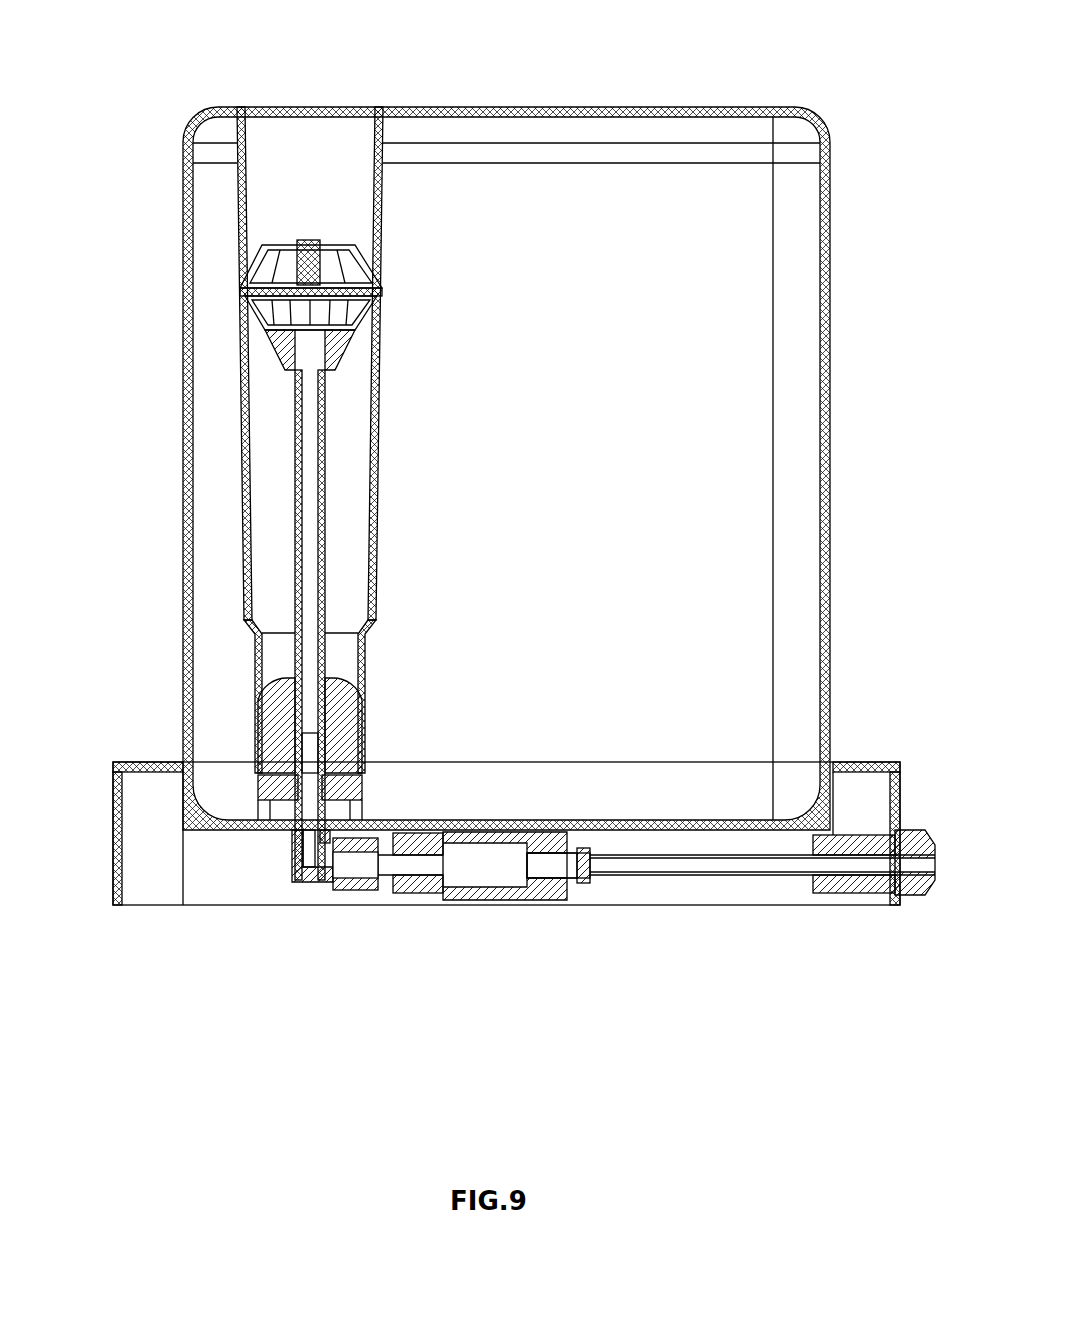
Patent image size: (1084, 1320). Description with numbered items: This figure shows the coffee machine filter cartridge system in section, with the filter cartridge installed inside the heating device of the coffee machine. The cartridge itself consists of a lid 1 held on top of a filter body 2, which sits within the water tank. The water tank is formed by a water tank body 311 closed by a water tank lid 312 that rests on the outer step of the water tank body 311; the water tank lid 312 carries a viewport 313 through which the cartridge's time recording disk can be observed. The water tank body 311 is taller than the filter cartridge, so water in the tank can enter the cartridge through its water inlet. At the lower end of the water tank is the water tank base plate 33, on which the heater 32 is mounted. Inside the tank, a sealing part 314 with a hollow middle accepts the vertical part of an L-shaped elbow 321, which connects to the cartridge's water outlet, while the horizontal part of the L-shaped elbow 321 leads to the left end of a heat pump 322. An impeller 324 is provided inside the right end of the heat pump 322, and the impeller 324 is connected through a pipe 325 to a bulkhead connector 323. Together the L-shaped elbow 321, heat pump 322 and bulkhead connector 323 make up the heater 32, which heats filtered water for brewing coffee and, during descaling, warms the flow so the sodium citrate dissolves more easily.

The lid 1 is at (248, 262).
The filter body 2 is at (242, 440).
The water tank body 311 is at (830, 430).
The water tank lid 312 is at (768, 108).
The viewport 313 is at (314, 128).
The sealing part 314 is at (292, 832).
The heater 32 is at (555, 978).
The L-shaped elbow 321 is at (350, 892).
The heat pump 322 is at (452, 892).
The bulkhead connector 323 is at (870, 892).
The impeller 324 is at (527, 882).
The pipe 325 is at (660, 882).
The water tank base plate 33 is at (172, 780).